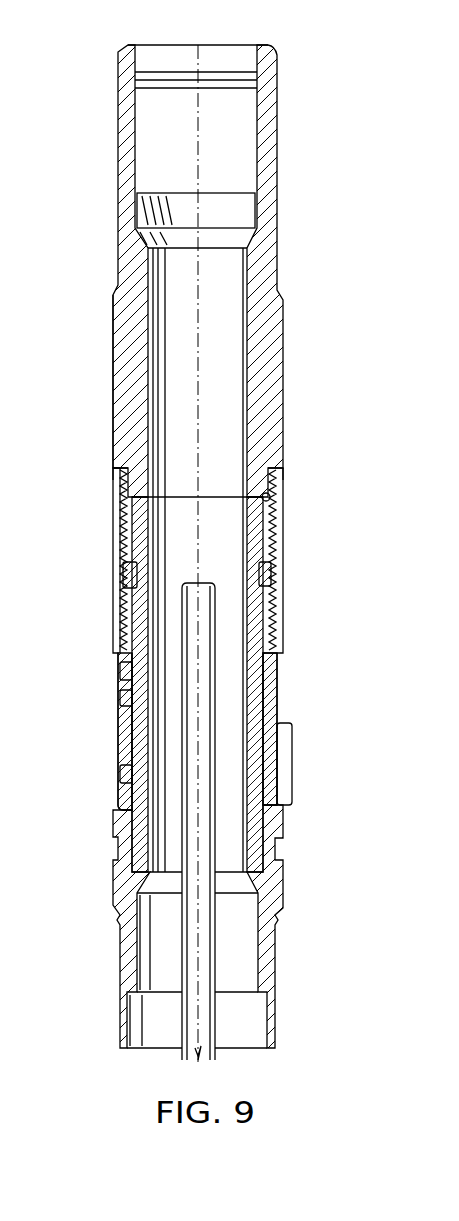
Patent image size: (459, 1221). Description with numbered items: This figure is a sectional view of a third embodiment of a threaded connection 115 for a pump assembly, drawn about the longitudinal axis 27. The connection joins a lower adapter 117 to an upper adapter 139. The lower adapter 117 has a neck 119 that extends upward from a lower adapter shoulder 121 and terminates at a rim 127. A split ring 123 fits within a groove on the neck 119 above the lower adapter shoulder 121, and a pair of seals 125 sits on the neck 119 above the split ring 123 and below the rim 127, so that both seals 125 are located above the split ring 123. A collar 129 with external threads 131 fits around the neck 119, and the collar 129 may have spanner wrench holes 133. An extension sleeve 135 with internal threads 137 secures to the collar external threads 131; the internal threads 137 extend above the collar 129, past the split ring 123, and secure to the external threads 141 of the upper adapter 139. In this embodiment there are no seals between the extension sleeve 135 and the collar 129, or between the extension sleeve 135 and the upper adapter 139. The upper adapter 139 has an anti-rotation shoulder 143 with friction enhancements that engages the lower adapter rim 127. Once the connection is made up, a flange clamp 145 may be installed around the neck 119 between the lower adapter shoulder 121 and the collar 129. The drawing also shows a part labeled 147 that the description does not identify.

The longitudinal axis 27 is at (198, 308).
The threaded connection 115 is at (78, 636).
The lower adapter 117 is at (113, 868).
The neck 119 is at (143, 734).
The lower adapter shoulder 121 is at (118, 800).
The split ring 123 is at (125, 575).
The seals 125 is at (120, 510).
The rim 127 is at (140, 468).
The collar 129 is at (118, 672).
The external threads 131 is at (120, 597).
The spanner wrench holes 133 is at (118, 697).
The extension sleeve 135 is at (281, 560).
The internal threads 137 is at (280, 518).
The upper adapter 139 is at (275, 410).
The external threads 141 is at (277, 483).
The anti-rotation shoulder 143 is at (278, 500).
The flange clamp 145 is at (118, 774).
The lug 147 is at (285, 767).